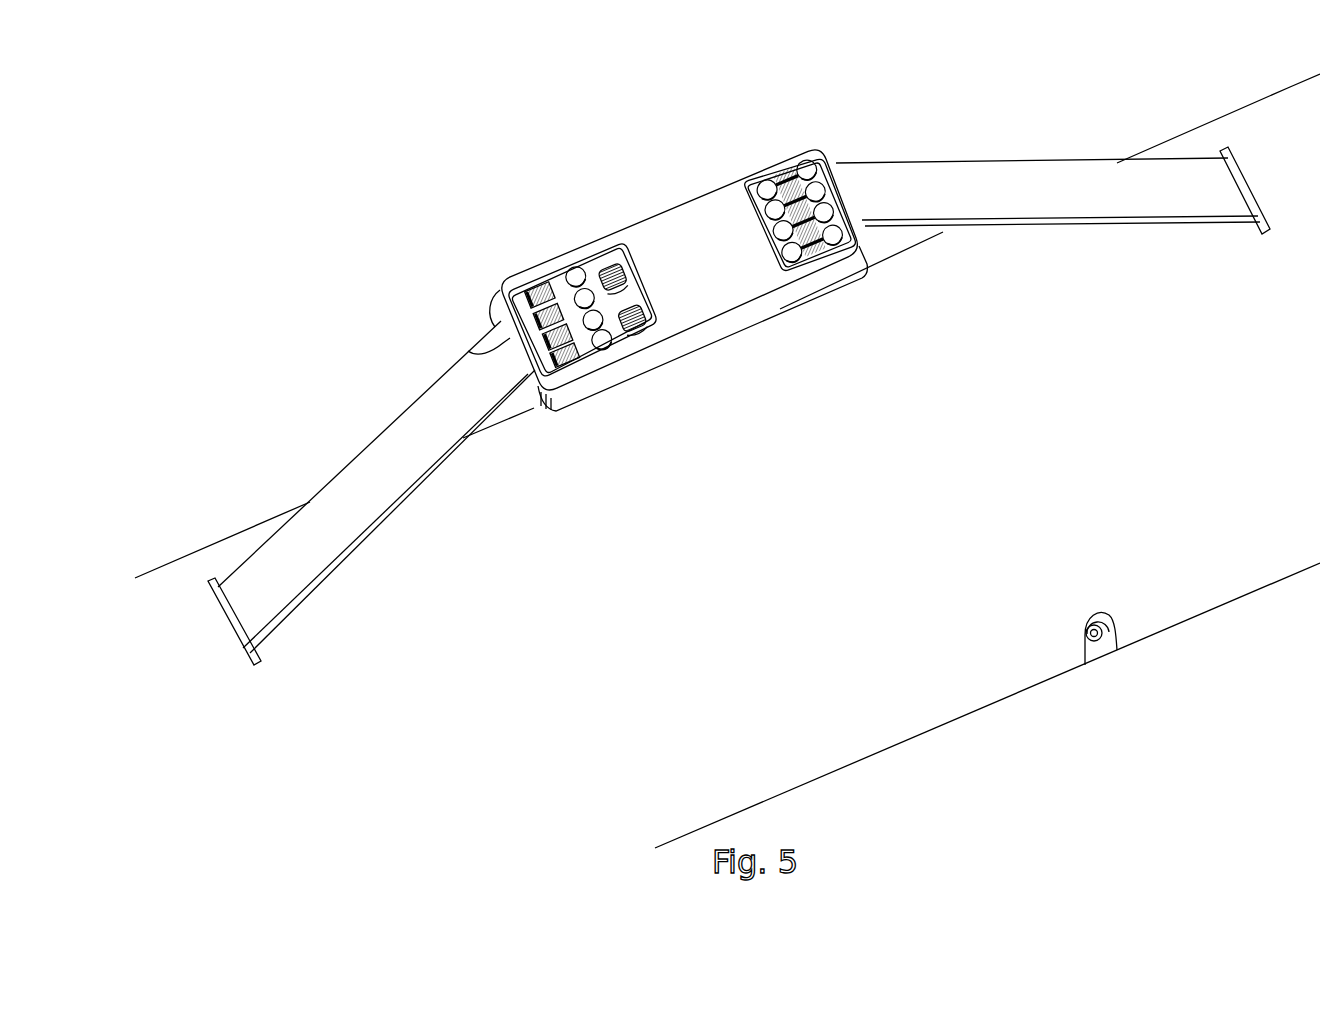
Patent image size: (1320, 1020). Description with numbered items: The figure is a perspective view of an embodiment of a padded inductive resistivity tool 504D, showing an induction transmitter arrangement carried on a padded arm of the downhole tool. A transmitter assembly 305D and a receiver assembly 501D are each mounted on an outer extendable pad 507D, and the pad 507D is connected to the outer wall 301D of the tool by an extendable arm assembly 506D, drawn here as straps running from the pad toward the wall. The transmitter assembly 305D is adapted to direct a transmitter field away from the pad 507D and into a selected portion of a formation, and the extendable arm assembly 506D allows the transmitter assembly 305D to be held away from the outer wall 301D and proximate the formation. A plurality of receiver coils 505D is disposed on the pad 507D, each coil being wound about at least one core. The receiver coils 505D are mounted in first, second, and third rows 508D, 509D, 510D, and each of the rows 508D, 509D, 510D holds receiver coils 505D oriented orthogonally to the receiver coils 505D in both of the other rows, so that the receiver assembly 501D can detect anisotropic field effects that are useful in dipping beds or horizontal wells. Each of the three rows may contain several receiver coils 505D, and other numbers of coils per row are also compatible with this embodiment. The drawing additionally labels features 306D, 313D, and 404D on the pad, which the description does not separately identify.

The outer wall 301D is at (1256, 100).
The transmitter assembly 305D is at (830, 266).
The conductive strip 306D is at (788, 175).
The electrode bumps 313D is at (753, 177).
The electrode pad recess 404D is at (533, 288).
The receiver assembly 501D is at (468, 351).
The padded inductive resistivity tool 504D is at (288, 220).
The receiver coils 505D is at (610, 270).
The extendable arm assembly 506D is at (413, 448).
The outer extendable pad 507D is at (705, 307).
The first row 508D is at (577, 384).
The second row 509D is at (615, 371).
The third row 510D is at (648, 354).